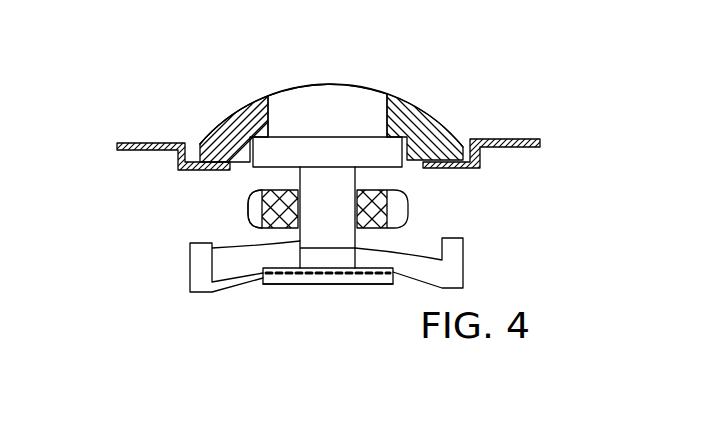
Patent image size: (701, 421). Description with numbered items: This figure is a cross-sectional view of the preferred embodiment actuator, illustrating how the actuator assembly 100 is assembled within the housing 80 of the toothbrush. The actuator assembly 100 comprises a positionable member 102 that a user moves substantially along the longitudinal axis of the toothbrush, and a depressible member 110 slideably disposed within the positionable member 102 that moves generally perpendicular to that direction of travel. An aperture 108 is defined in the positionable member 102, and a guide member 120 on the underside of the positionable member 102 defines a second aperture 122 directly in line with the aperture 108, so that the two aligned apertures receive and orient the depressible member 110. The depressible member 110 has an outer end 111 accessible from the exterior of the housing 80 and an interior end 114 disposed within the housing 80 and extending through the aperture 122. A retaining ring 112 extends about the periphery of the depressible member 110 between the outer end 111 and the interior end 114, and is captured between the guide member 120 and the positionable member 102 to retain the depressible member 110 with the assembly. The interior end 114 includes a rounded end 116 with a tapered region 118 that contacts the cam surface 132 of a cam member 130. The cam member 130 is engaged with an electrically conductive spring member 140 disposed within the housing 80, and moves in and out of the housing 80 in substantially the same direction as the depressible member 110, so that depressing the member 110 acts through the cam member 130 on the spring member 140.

The housing 80 is at (137, 143).
The actuator assembly 100 is at (121, 73).
The positionable member 102 is at (218, 124).
The aperture 108 is at (255, 112).
The depressible member 110 is at (327, 85).
The outer end 111 is at (352, 112).
The retaining ring 112 is at (367, 153).
The interior end 114 is at (408, 170).
The rounded end 116 is at (190, 254).
The tapered region 118 is at (464, 259).
The guide member 120 is at (288, 195).
The aperture 122 is at (250, 222).
The cam member 130 is at (190, 260).
The cam surface 132 is at (322, 257).
The spring member 140 is at (357, 278).